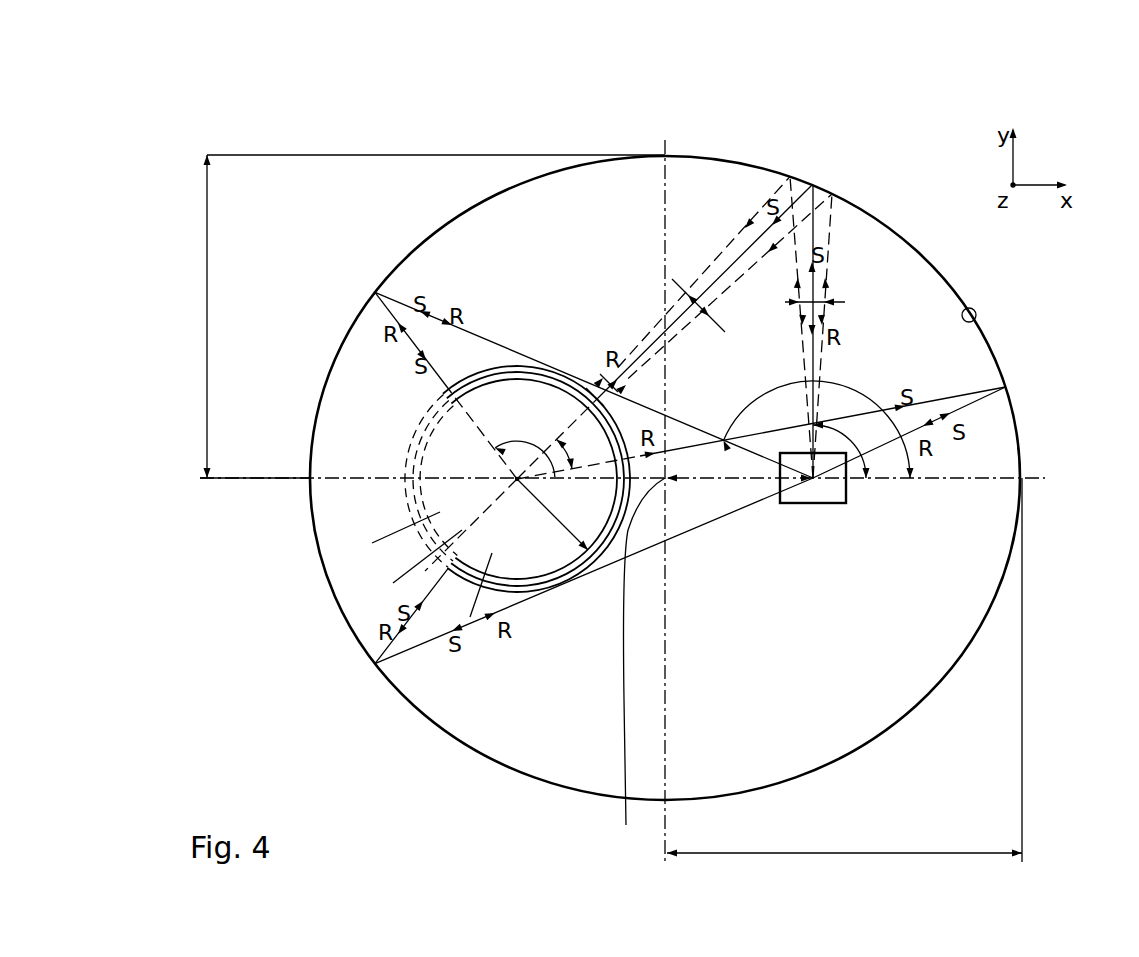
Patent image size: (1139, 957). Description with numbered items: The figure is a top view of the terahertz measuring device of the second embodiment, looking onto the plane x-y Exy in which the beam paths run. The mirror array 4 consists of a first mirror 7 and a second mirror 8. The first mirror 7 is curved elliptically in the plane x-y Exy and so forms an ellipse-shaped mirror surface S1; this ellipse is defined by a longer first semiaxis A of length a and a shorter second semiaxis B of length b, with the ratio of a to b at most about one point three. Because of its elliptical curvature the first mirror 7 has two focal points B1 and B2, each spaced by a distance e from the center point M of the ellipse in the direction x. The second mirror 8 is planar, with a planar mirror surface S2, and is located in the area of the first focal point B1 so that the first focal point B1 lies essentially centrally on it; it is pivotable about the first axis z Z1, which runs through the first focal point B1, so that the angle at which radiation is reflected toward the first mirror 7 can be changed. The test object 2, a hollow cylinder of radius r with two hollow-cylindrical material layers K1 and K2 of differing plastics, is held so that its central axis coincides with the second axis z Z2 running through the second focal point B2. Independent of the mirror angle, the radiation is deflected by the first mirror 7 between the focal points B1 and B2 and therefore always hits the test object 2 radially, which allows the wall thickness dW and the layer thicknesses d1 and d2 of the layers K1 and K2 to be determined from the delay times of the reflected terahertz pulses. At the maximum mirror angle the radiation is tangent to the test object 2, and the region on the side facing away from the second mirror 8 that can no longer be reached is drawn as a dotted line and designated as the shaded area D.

The test object 2 is at (423, 420).
The mirror array 4 is at (1012, 387).
The first mirror 7 is at (722, 153).
The second mirror 8 is at (808, 497).
The first semiaxis A is at (985, 478).
The second semiaxis B is at (672, 197).
The center point of the ellipse M is at (641, 666).
The plane x-y Exy is at (893, 240).
The shaded area D is at (435, 403).
The first material layer K1 is at (413, 453).
The second material layer K2 is at (420, 443).
The first axis z Z1 is at (820, 492).
The second axis z Z2 is at (517, 479).
The first focal point B1 is at (815, 480).
The second focal point B2 is at (517, 479).
The mirror surface S1 is at (976, 308).
The planar mirror surface S2 is at (795, 503).
The length of the first semiaxis a is at (844, 670).
The length of the second semiaxis b is at (425, 316).
The distance e is at (739, 469).
The radius of the test object r is at (553, 515).
The wall thickness d is at (598, 382).
The layer thickness d1 is at (406, 529).
The layer thickness d2 is at (427, 558).
The wall thickness dW is at (465, 589).